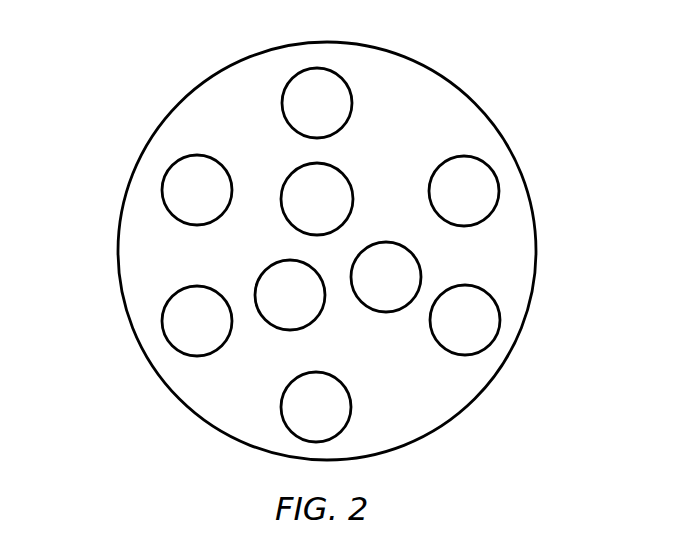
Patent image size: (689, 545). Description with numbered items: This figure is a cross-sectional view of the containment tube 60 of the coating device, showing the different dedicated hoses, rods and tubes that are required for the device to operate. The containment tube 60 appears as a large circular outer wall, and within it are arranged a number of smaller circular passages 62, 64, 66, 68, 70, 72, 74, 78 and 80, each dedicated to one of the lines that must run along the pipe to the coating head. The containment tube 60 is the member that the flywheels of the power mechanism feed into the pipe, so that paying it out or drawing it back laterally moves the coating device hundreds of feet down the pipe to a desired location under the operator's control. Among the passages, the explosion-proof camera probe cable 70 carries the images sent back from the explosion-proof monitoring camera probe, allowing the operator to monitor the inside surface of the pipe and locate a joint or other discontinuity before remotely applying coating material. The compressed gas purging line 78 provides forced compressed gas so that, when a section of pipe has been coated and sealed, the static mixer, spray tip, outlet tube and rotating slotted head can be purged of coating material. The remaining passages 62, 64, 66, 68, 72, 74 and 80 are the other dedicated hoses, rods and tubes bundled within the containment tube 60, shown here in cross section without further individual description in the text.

The containment tube 60 is at (108, 68).
The contact opening 62 is at (290, 98).
The contact opening 64 is at (182, 183).
The contact opening 66 is at (183, 326).
The contact opening 68 is at (290, 320).
The explosion-proof camera probe cable 70 is at (308, 420).
The contact opening 72 is at (468, 337).
The contact opening 74 is at (407, 269).
The compressed gas purging line 78 is at (480, 195).
The contact opening 80 is at (333, 196).